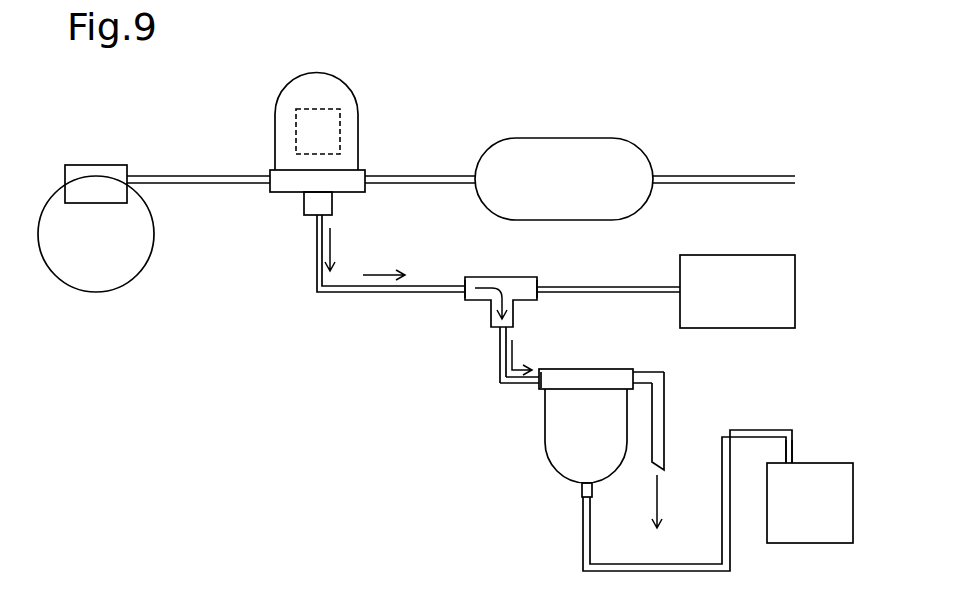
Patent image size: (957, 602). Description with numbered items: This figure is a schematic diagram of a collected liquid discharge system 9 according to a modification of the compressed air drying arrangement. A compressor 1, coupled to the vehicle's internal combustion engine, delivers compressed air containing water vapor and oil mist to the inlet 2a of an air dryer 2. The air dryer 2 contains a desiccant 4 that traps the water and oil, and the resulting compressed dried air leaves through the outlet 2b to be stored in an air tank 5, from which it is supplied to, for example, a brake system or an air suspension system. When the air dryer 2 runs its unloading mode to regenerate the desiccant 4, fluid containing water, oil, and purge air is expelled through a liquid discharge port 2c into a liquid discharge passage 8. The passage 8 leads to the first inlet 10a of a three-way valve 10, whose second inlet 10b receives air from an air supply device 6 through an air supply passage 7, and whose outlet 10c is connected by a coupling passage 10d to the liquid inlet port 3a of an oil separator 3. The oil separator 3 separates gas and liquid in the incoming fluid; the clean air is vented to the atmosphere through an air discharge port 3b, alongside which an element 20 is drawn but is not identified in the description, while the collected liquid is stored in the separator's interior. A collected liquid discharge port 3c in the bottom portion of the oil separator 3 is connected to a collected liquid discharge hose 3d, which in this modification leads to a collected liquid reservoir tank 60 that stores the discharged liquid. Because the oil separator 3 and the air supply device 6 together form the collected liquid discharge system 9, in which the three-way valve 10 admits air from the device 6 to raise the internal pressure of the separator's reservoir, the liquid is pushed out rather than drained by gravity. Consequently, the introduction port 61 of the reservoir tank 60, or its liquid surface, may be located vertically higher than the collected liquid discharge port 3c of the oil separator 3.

The compressor 1 is at (98, 165).
The air dryer 2 is at (290, 85).
The inlet 2a is at (270, 172).
The outlet 2b is at (367, 172).
The liquid discharge port 2c is at (316, 221).
The oil separator 3 is at (598, 369).
The liquid inlet port 3a is at (528, 389).
The air discharge port 3b is at (636, 371).
The collected liquid discharge port 3c is at (582, 491).
The collected liquid discharge hose 3d is at (583, 523).
The desiccant 4 is at (340, 118).
The air tank 5 is at (565, 138).
The air supply device 6 is at (752, 255).
The air supply passage 7 is at (601, 287).
The liquid discharge passage 8 is at (355, 292).
The collected liquid discharge system 9 is at (452, 443).
The three-way valve 10 is at (497, 277).
The first inlet 10a is at (465, 281).
The second inlet 10b is at (539, 281).
The outlet 10c is at (500, 331).
The coupling passage 10d is at (500, 380).
The discharge tube 20 is at (666, 406).
The collected liquid reservoir tank 60 is at (840, 463).
The introduction port 61 is at (794, 462).